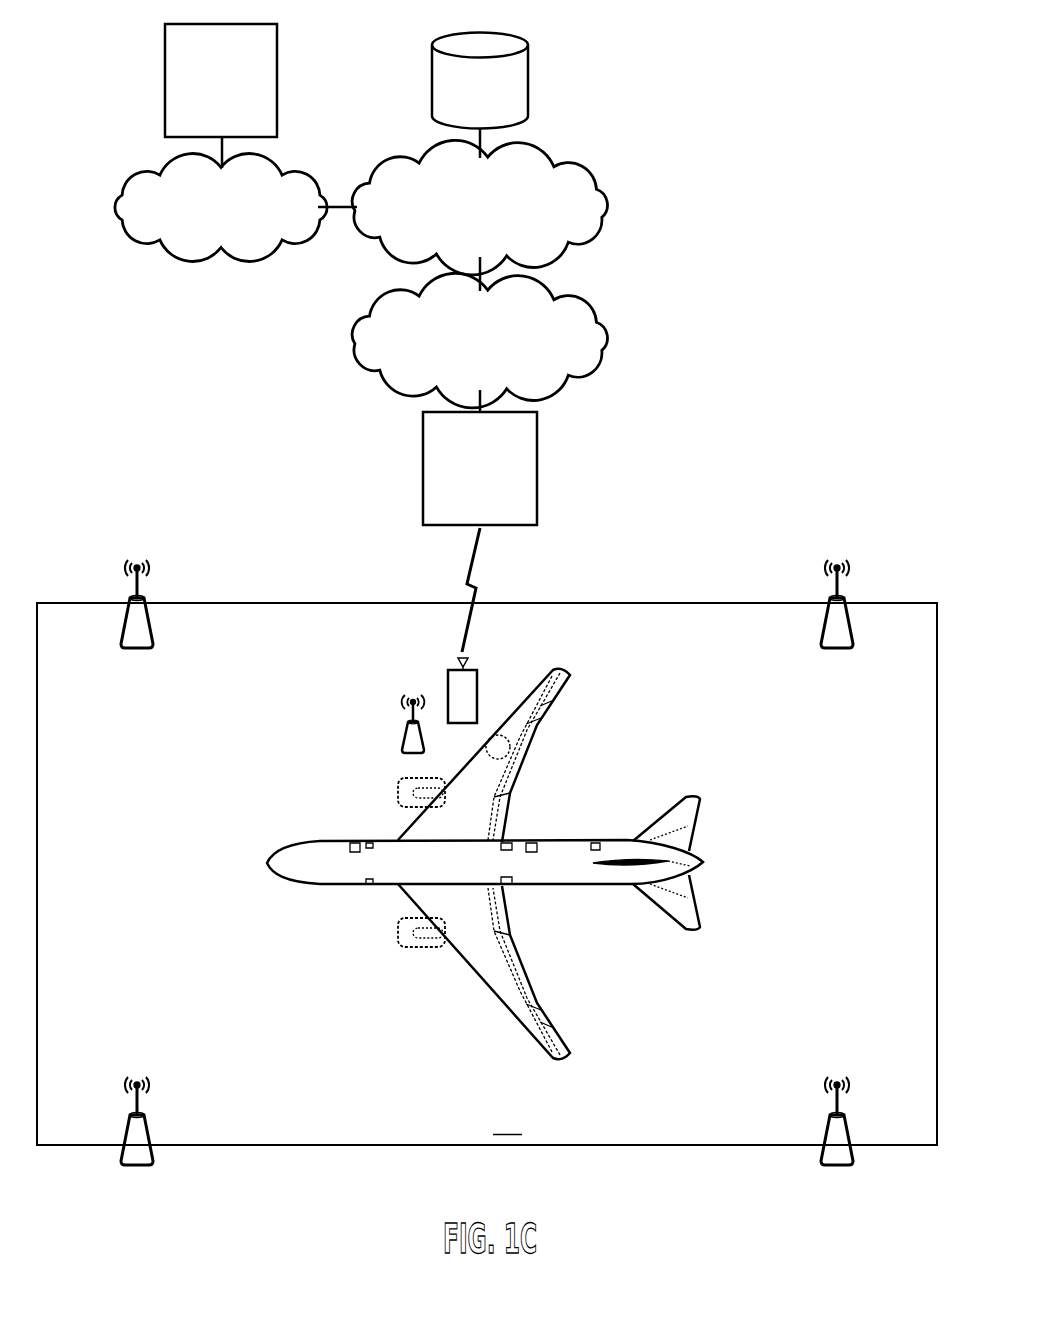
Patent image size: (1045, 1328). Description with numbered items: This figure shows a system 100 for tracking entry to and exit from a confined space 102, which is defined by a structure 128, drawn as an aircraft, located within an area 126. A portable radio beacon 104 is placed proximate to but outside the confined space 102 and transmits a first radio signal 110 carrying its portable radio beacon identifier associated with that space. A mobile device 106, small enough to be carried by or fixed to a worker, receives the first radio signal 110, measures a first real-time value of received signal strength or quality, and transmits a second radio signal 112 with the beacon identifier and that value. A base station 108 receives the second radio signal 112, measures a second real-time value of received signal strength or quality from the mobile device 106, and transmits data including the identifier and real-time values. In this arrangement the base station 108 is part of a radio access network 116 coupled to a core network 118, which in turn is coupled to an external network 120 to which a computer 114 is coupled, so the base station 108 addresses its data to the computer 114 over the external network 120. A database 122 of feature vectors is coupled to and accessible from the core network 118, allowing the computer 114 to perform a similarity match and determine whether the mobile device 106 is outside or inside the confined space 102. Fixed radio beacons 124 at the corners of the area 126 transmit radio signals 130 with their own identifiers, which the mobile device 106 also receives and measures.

The system 100 is at (693, 38).
The confined space 102 is at (510, 748).
The portable radio beacon 104 is at (405, 733).
The mobile device 106 is at (477, 668).
The base station 108 is at (423, 473).
The first radio signal 110 is at (425, 697).
The second radio signal 112 is at (467, 576).
The computer 114 is at (204, 23).
The radio access network 116 is at (360, 312).
The core network 118 is at (403, 157).
The external network 120 is at (208, 253).
The database 122 is at (481, 31).
The fixed radio beacons 124 is at (122, 628).
The area 126 is at (487, 874).
The structure 128 is at (355, 930).
The radio signals 130 is at (121, 566).